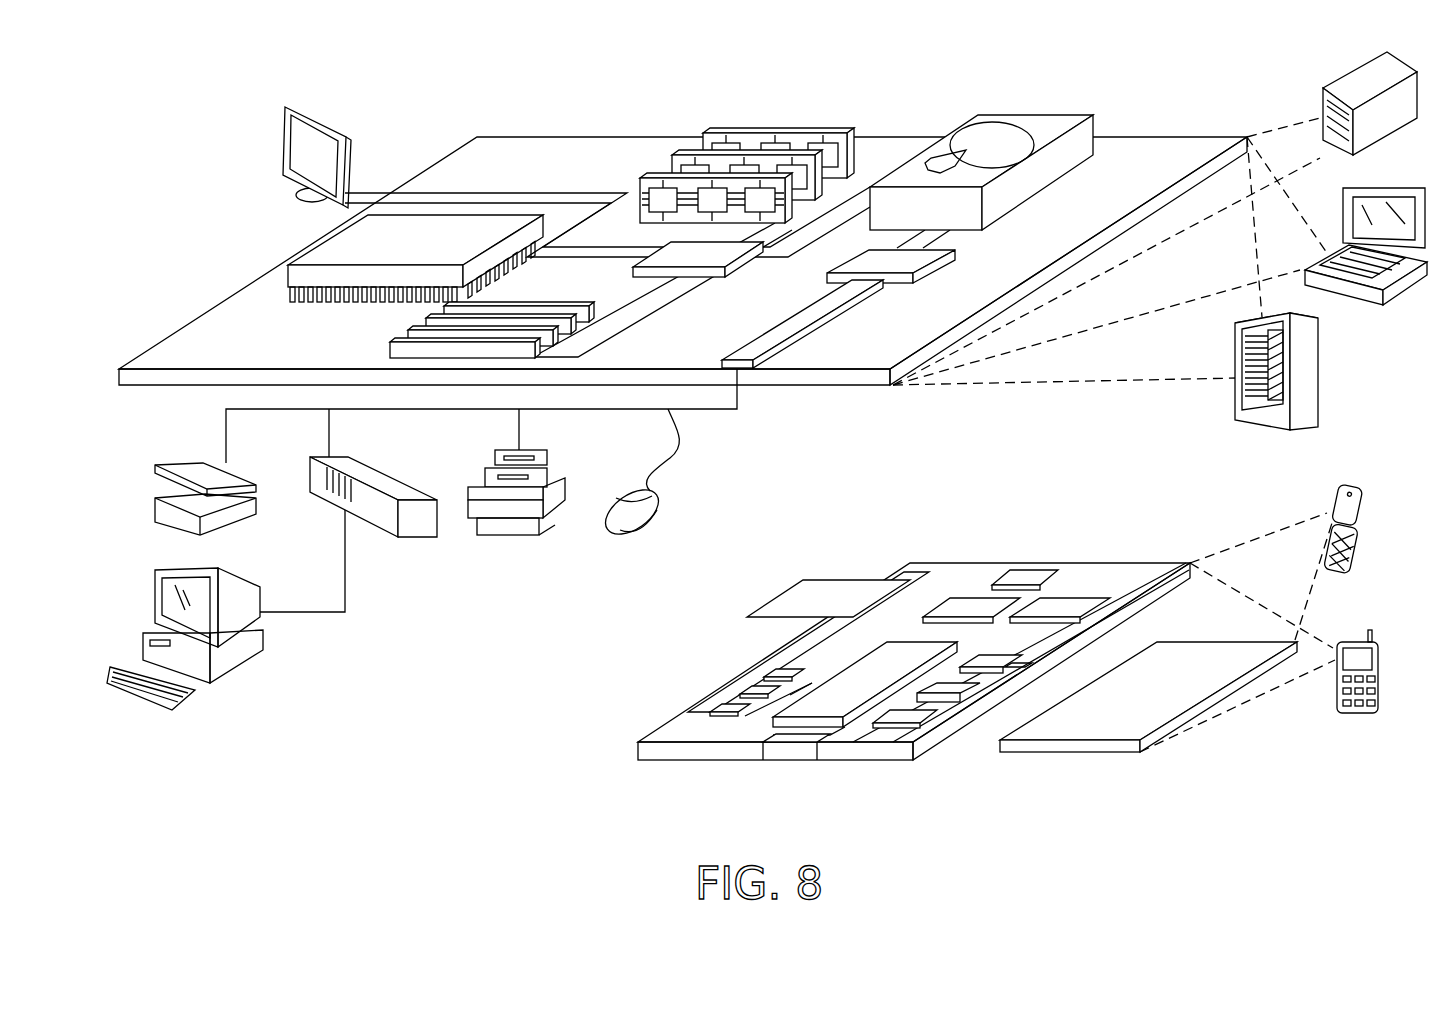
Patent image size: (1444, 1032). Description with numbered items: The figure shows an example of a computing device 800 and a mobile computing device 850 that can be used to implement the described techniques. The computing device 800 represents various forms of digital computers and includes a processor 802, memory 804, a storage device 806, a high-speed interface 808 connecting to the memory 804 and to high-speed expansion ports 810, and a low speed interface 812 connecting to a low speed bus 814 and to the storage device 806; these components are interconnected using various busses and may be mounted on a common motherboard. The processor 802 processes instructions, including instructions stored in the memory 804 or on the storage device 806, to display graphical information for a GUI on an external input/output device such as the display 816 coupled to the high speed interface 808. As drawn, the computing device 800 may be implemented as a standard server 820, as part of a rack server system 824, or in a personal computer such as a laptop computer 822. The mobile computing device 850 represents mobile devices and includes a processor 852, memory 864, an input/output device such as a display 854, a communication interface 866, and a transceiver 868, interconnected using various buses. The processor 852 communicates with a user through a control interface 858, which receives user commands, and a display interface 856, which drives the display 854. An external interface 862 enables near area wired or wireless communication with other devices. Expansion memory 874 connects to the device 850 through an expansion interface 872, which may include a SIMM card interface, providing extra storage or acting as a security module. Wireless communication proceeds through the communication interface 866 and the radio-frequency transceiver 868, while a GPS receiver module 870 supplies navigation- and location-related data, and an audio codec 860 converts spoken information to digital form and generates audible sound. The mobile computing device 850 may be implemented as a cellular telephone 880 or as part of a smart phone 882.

The computing device 800 is at (420, 82).
The processor 802 is at (313, 248).
The memory 804 is at (783, 132).
The storage device 806 is at (1023, 112).
The high-speed interface 808 is at (710, 252).
The high-speed expansion ports 810 is at (420, 330).
The low speed interface 812 is at (862, 257).
The low speed bus 814 is at (745, 357).
The display 816 is at (287, 108).
The standard server 820 is at (1347, 82).
The laptop computer 822 is at (1402, 187).
The rack server system 824 is at (1318, 370).
The mobile computing device 850 is at (586, 770).
The processor 852 is at (830, 688).
The display 854 is at (1187, 653).
The display interface 856 is at (930, 718).
The control interface 858 is at (957, 690).
The audio codec 860 is at (997, 653).
The external interface 862 is at (790, 747).
The memory 864 is at (740, 693).
The communication interface 866 is at (970, 600).
The transceiver 868 is at (1070, 598).
The GPS receiver module 870 is at (1023, 575).
The expansion interface 872 is at (893, 578).
The expansion memory 874 is at (805, 578).
The cellular telephone 880 is at (1343, 485).
The smart phone 882 is at (1350, 640).